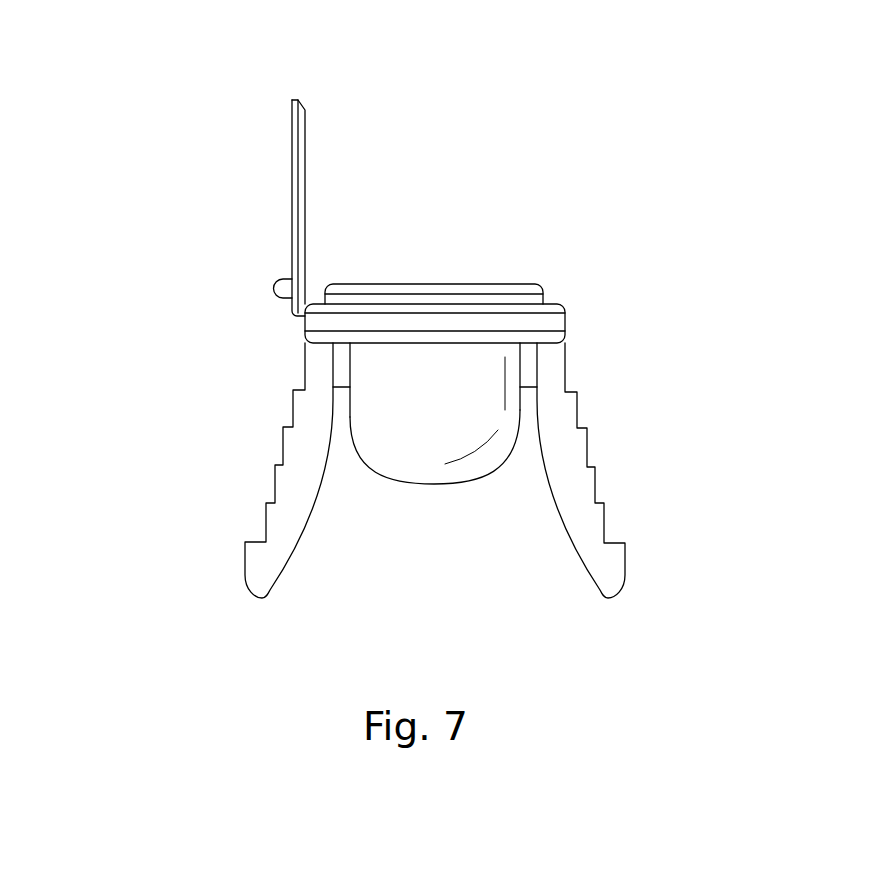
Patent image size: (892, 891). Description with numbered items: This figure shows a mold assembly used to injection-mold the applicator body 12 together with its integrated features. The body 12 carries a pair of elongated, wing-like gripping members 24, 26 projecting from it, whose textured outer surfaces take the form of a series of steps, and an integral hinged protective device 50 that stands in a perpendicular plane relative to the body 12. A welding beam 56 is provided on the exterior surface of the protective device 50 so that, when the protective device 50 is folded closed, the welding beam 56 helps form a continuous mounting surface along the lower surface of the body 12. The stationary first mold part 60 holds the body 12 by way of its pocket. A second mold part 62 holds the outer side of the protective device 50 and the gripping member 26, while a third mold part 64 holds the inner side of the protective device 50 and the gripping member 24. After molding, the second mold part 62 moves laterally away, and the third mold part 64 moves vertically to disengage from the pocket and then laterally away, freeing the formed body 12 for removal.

The body 12 is at (568, 323).
The gripping member 24 is at (568, 476).
The gripping member 26 is at (285, 525).
The protective device 50 is at (293, 135).
The welding beam 56 is at (273, 279).
The first mold part 60 is at (452, 580).
The second mold part 62 is at (200, 372).
The third mold part 64 is at (494, 174).